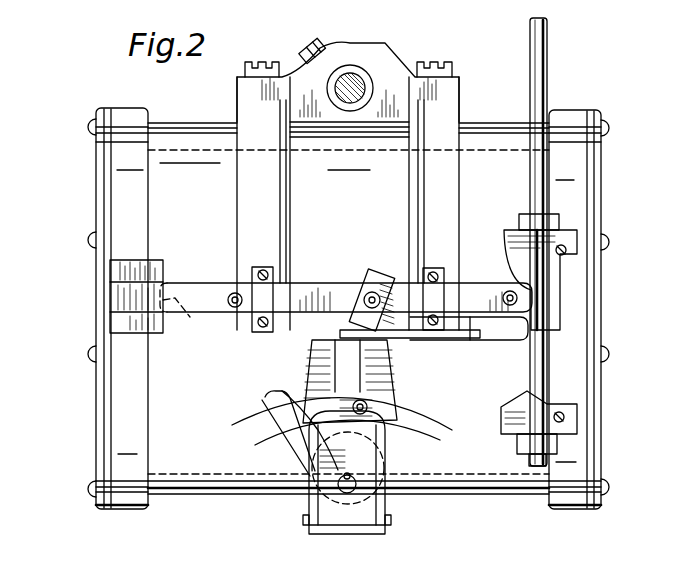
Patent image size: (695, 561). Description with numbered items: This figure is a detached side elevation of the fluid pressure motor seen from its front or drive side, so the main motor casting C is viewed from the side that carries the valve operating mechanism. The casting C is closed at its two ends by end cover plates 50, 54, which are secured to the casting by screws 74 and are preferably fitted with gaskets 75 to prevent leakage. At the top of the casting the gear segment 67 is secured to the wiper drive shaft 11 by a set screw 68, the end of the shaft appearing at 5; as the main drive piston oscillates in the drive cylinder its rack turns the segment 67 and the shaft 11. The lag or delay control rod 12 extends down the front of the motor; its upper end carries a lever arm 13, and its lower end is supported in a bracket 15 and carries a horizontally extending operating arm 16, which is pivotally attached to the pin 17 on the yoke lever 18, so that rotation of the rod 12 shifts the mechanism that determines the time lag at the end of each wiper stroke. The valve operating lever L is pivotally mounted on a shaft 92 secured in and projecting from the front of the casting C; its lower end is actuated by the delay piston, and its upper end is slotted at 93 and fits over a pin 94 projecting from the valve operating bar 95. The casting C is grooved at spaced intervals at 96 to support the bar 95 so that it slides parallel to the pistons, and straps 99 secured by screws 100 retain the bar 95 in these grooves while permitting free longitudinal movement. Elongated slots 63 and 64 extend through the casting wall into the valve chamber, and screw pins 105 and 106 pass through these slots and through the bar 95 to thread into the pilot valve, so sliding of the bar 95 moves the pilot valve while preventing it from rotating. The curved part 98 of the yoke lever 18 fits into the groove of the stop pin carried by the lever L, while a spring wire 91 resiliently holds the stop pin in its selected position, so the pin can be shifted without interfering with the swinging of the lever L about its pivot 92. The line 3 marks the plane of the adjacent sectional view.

The main motor casting C is at (168, 140).
The section line 3- 3 is at (637, 531).
The bore 5 is at (339, 70).
The wiper drive shaft 11 is at (355, 78).
The lag or delay control rod 12 is at (537, 70).
The lever arm 13 is at (137, 409).
The bracket 15 is at (514, 220).
The horizontally extending operating arm 16 is at (483, 333).
The pin 17 is at (342, 314).
The yoke lever 18 is at (366, 406).
The end cover plate 50 is at (591, 197).
The end cover plate 54 is at (103, 184).
The elongated slot 63 is at (505, 313).
The elongated slot 64 is at (190, 317).
The gear segment 67 is at (385, 63).
The set screw 68 is at (320, 42).
The screws 74 is at (95, 125).
The gaskets 75 is at (108, 511).
The spring wire 91 is at (270, 398).
The shaft 92 is at (356, 482).
The slot 93 is at (375, 290).
The pin 94 is at (360, 300).
The valve operating bar 95 is at (309, 287).
The grooves 96 is at (148, 290).
The curved part 98 is at (310, 437).
The straps 99 is at (257, 305).
The screws 100 is at (257, 275).
The screw pin 105 is at (233, 305).
The screw pin 106 is at (508, 295).
The valve operating lever L is at (390, 436).